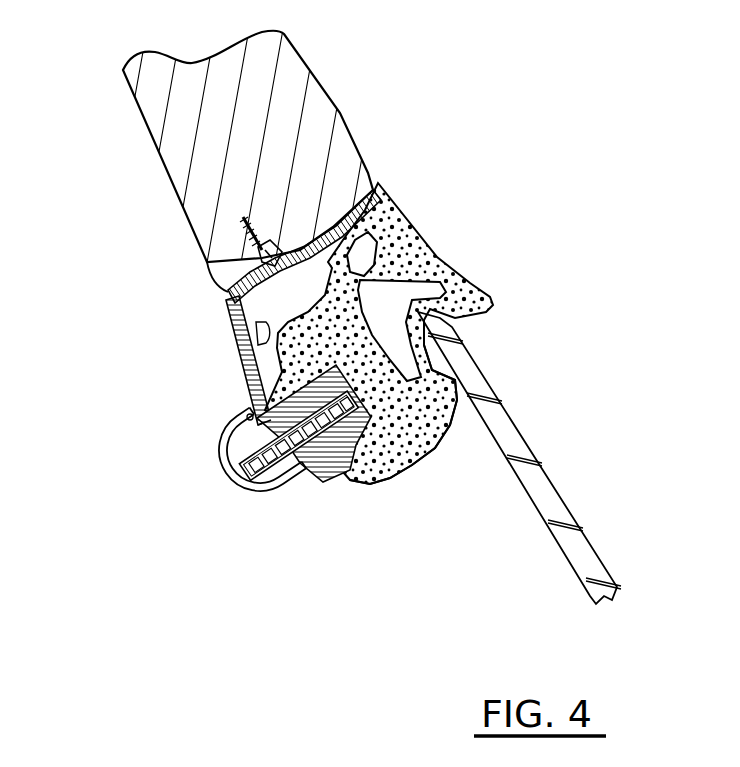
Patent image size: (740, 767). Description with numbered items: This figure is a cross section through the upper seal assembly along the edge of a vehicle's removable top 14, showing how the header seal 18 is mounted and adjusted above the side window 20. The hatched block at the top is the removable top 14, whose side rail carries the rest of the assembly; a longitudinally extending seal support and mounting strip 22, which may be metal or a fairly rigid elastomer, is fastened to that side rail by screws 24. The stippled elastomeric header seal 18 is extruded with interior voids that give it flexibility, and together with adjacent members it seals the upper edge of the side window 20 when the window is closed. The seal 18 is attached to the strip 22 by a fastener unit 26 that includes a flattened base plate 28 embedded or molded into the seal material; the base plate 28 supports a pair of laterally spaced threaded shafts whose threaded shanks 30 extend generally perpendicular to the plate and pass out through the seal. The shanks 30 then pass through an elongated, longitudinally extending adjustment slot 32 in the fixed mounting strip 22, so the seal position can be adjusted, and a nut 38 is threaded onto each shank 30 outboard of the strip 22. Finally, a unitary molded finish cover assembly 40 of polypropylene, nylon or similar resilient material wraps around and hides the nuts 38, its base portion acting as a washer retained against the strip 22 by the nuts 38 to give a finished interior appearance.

The removable top 14 is at (345, 115).
The header seal 18 is at (436, 262).
The side window 20 is at (513, 433).
The seal support and mounting strip 22 is at (231, 291).
The screws 24 is at (262, 258).
The fastener unit 26 is at (380, 430).
The base plate 28 is at (428, 447).
The threaded shanks 30 is at (360, 470).
The adjustment slot 32 is at (250, 414).
The nut 38 is at (277, 493).
The finish cover assembly 40 is at (243, 503).